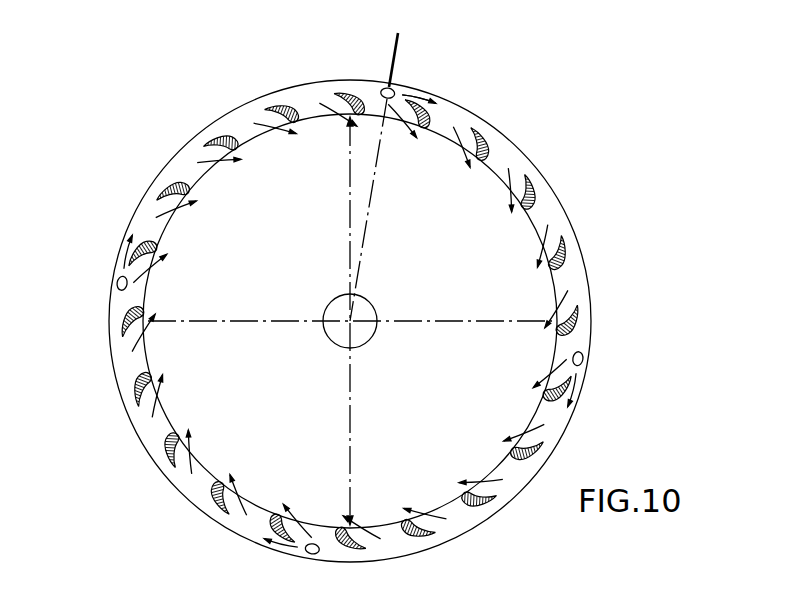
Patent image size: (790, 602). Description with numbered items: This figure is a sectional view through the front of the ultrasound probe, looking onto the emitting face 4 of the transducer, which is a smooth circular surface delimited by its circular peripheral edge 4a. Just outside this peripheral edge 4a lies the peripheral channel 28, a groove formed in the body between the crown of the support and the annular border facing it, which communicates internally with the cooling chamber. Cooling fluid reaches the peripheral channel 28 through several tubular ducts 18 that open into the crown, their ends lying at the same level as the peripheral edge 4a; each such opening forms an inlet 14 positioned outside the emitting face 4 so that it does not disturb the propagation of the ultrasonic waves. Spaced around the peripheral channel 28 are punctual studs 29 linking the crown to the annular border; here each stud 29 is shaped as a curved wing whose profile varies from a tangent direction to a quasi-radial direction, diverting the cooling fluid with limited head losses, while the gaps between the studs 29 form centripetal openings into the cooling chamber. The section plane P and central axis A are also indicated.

The emitting face 4 is at (190, 410).
The peripheral edge 4a is at (500, 182).
The inlet 14 is at (408, 92).
The tubular duct 18 is at (385, 89).
The peripheral channel 28 is at (541, 207).
The stud 29 is at (346, 96).
The axis A is at (352, 321).
The plane P is at (400, 45).